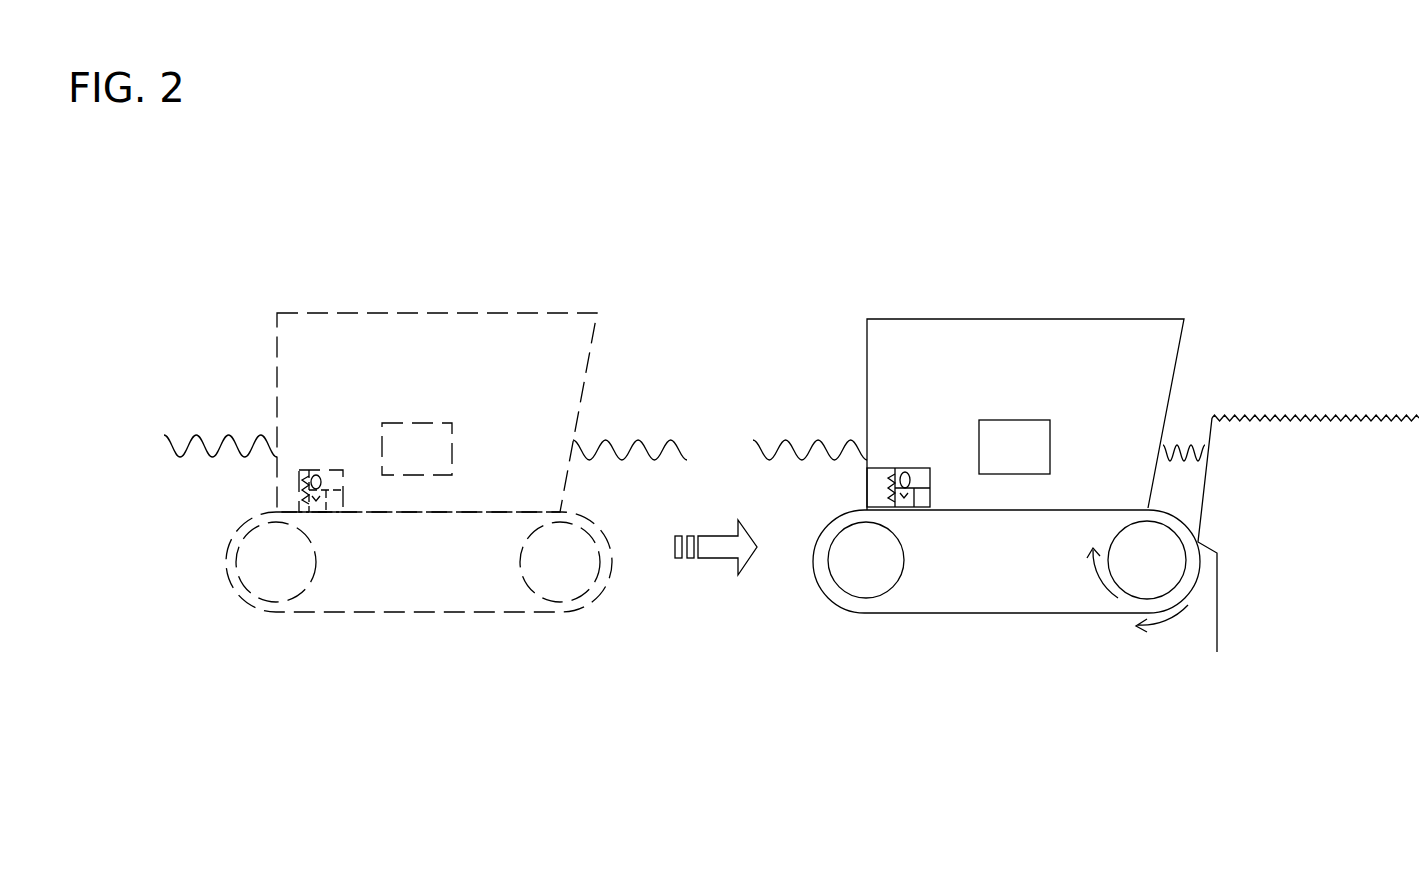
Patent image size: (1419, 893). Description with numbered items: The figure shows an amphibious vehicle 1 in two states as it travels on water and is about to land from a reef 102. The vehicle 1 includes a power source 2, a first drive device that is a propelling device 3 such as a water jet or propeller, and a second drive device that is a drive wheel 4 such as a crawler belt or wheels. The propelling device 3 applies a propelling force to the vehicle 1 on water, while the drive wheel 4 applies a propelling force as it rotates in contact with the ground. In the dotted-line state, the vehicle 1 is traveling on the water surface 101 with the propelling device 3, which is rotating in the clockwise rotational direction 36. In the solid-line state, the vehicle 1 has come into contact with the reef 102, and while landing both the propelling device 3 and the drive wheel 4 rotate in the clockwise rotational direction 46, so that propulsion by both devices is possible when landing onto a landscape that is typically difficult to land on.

The vehicle 1 is at (437, 313).
The power source 2 is at (716, 447).
The propelling device 3 is at (342, 508).
The clockwise rotational direction 36 is at (316, 480).
The drive wheel 4 is at (427, 613).
The clockwise rotational direction 46 is at (1118, 600).
The water surface 101 is at (164, 435).
The reef 102 is at (1308, 533).